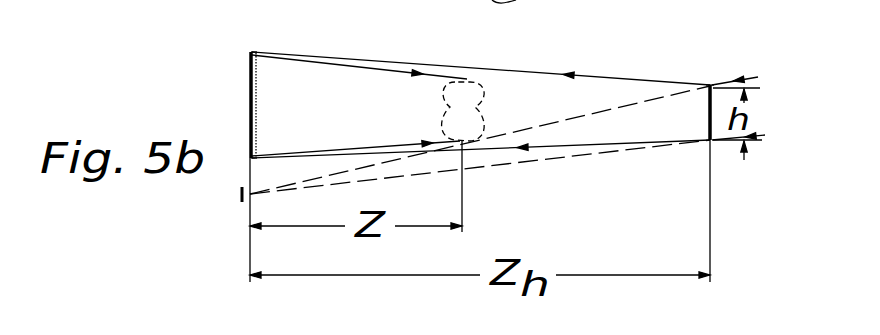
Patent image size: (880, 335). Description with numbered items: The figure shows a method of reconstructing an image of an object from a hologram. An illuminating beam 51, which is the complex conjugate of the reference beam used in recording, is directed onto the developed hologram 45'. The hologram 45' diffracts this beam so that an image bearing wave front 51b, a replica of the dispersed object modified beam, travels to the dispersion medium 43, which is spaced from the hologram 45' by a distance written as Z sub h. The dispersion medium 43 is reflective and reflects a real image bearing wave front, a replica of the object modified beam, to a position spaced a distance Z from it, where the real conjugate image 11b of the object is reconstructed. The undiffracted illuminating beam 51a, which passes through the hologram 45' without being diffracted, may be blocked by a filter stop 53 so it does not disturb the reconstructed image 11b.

The dispersion medium 43 is at (252, 53).
The real conjugate image 11b is at (469, 82).
The image bearing wave front 51b is at (598, 143).
The illuminating beam 51 is at (752, 74).
The developed hologram 45' is at (677, 66).
The undiffracted illuminating beam 51a is at (540, 127).
The filter stop 53 is at (238, 195).